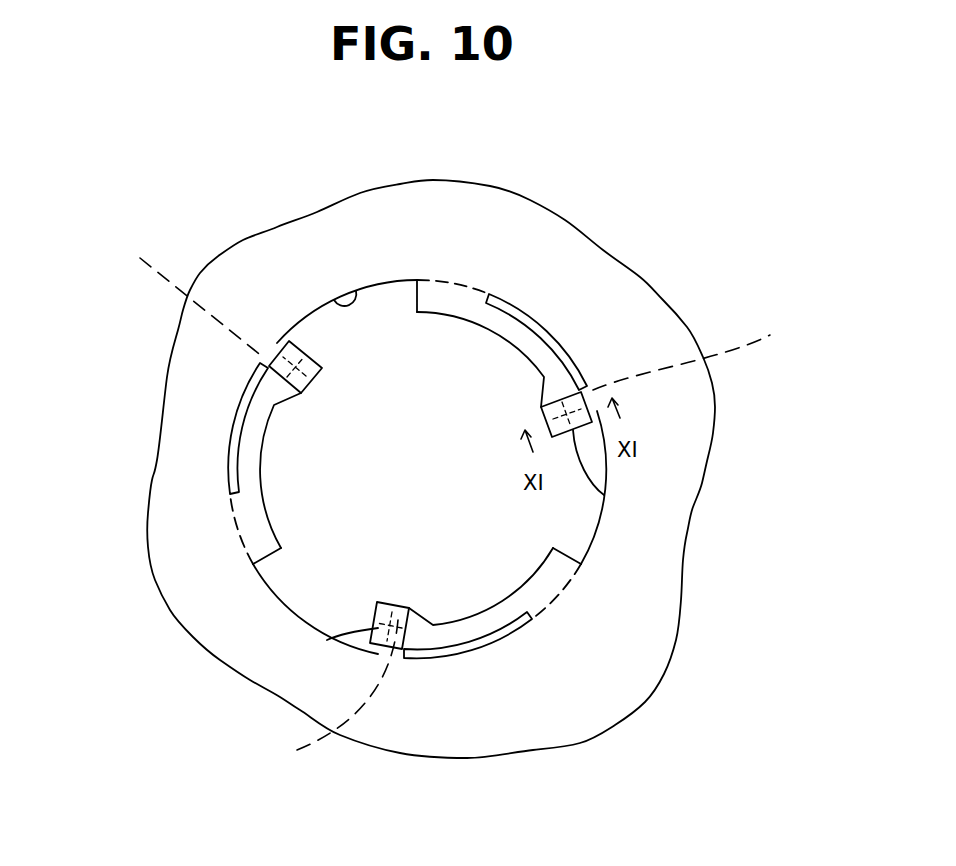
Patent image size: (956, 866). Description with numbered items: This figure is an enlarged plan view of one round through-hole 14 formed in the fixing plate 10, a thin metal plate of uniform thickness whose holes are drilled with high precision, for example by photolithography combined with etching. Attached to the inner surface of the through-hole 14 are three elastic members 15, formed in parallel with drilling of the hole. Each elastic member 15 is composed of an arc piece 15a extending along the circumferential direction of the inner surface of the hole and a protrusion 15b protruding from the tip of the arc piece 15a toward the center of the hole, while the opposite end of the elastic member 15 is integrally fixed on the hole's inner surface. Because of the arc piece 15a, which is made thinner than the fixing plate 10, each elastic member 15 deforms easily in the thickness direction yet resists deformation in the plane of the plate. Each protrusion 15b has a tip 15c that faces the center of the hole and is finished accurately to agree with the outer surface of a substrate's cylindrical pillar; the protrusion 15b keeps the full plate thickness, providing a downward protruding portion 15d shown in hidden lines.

The fixing plate 10 is at (663, 300).
The through-hole 14 is at (328, 296).
The elastic member 15 is at (547, 343).
The arc piece 15a is at (512, 340).
The protrusion 15b is at (603, 493).
The tip 15c is at (537, 418).
The downward protruding portion 15d is at (453, 506).